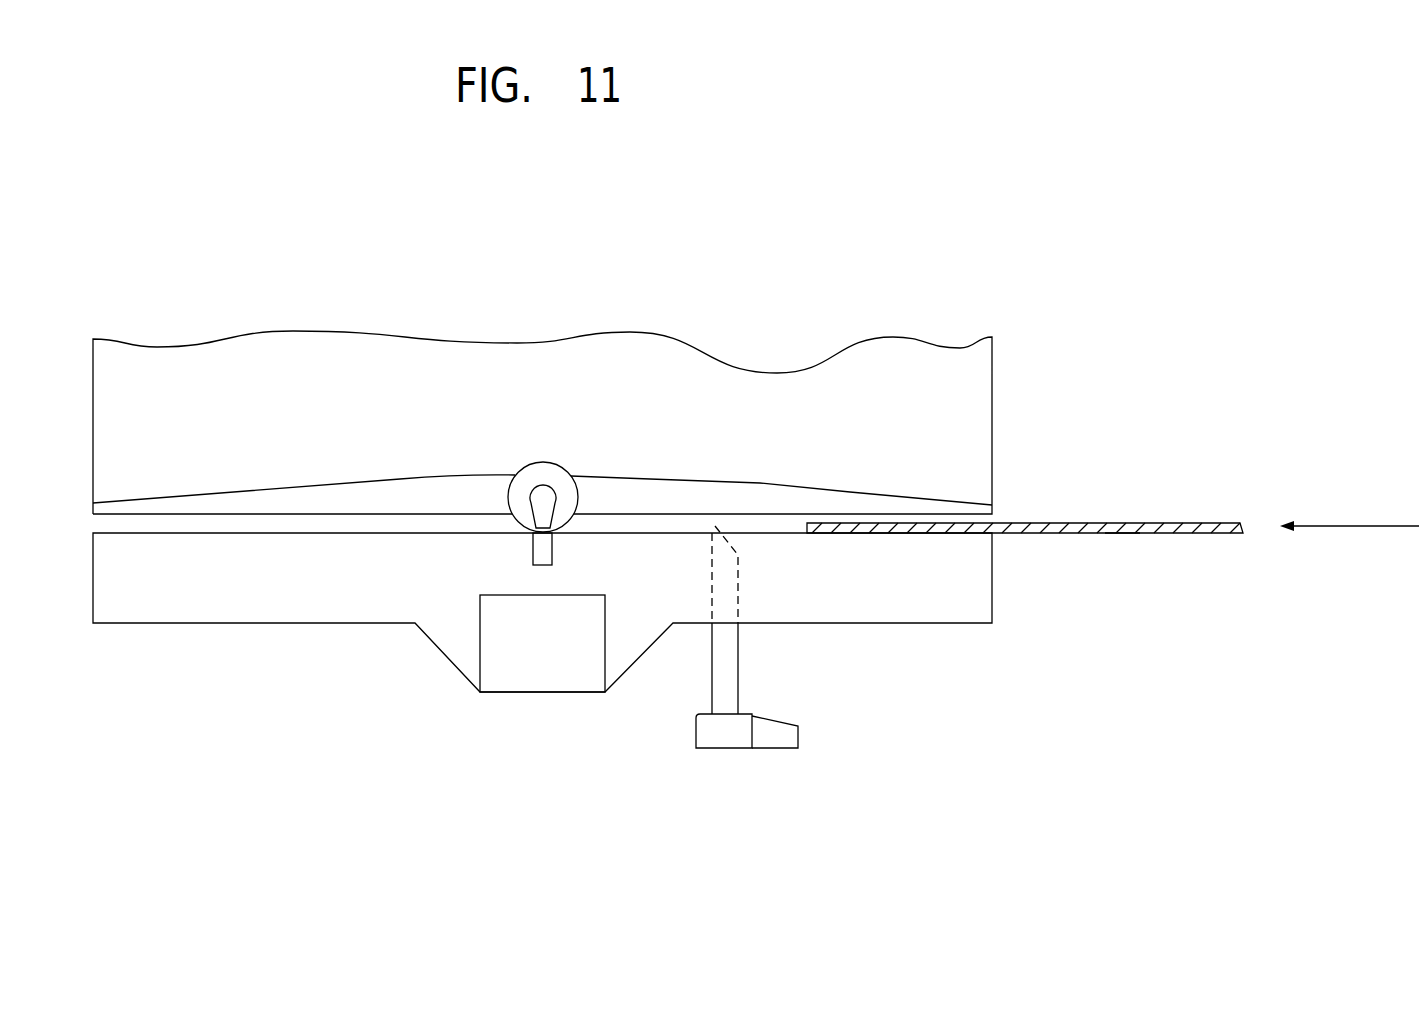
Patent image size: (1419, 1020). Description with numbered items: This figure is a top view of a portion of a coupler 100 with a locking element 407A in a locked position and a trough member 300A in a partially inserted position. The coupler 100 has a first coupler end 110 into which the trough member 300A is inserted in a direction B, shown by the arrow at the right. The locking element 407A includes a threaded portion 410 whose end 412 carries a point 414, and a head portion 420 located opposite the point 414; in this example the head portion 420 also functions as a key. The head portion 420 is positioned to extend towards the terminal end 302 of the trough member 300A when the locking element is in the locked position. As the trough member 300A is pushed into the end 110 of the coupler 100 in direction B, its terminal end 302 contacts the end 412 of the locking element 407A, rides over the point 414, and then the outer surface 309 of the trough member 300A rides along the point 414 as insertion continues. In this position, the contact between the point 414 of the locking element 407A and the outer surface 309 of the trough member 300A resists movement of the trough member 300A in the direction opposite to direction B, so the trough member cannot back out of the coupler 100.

The coupler 100 is at (765, 326).
The first coupler end 110 is at (992, 398).
The trough member 300A is at (1160, 479).
The terminal end 302 is at (825, 530).
The outer surface 309 is at (1124, 554).
The direction B is at (1370, 526).
The locking element 407A is at (686, 761).
The threaded portion 410 is at (715, 667).
The end 412 is at (717, 528).
The point 414 is at (713, 520).
The head portion 420 is at (775, 737).